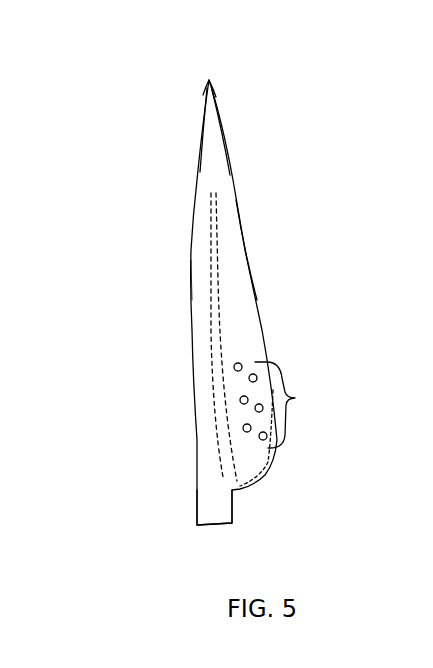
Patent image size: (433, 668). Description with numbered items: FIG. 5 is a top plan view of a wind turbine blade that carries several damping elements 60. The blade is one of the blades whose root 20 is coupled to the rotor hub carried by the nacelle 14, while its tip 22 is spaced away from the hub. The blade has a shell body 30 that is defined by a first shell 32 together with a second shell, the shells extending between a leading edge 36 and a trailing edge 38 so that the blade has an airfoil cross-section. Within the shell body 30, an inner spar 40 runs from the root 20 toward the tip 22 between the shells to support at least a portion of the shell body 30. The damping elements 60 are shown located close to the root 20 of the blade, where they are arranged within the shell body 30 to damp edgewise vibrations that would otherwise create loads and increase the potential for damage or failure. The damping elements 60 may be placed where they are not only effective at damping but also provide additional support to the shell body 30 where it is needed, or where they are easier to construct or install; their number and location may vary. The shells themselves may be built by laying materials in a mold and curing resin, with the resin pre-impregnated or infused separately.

The nacelle 14 is at (88, 102).
The tip 22 is at (208, 78).
The leading edge 36 is at (196, 153).
The trailing edge 38 is at (231, 155).
The inner spar 40 is at (207, 222).
The shell body 30 is at (188, 247).
The first shell 32 is at (237, 276).
The damping elements 60 is at (297, 398).
The root 20 is at (198, 517).